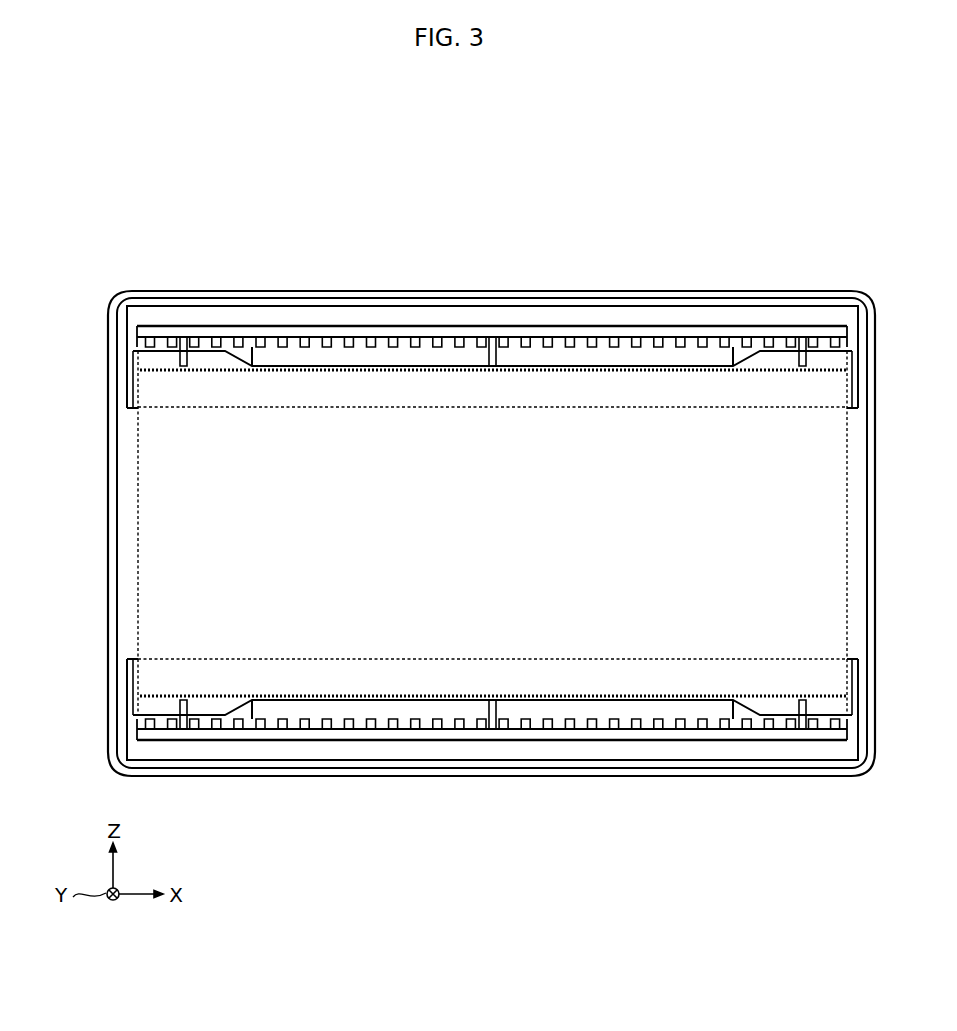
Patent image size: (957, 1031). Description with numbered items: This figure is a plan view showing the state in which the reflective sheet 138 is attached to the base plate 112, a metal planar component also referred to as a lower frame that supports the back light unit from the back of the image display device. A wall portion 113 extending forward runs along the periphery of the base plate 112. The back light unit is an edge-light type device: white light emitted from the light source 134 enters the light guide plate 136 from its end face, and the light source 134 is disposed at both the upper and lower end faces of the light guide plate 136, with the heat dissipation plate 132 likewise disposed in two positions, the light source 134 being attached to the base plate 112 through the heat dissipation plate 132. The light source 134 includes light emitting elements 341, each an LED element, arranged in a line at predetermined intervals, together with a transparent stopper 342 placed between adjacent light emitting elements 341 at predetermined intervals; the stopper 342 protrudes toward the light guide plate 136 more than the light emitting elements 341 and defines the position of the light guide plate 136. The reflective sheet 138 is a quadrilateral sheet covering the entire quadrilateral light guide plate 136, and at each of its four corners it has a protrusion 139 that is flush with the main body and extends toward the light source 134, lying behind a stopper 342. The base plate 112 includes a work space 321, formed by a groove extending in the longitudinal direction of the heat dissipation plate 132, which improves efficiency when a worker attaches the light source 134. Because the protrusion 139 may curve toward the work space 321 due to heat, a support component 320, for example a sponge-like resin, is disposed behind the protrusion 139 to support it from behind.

The base plate 112 is at (593, 298).
The wall portion 113 is at (289, 292).
The heat dissipation plate 132 is at (513, 306).
The light source 134 is at (440, 337).
The light guide plate 136 is at (105, 445).
The reflective sheet 138 is at (485, 540).
The protrusion 139 is at (832, 362).
The support component 320 is at (735, 330).
The work space 321 is at (667, 340).
The light emitting element 341 is at (373, 326).
The stopper 342 is at (801, 340).